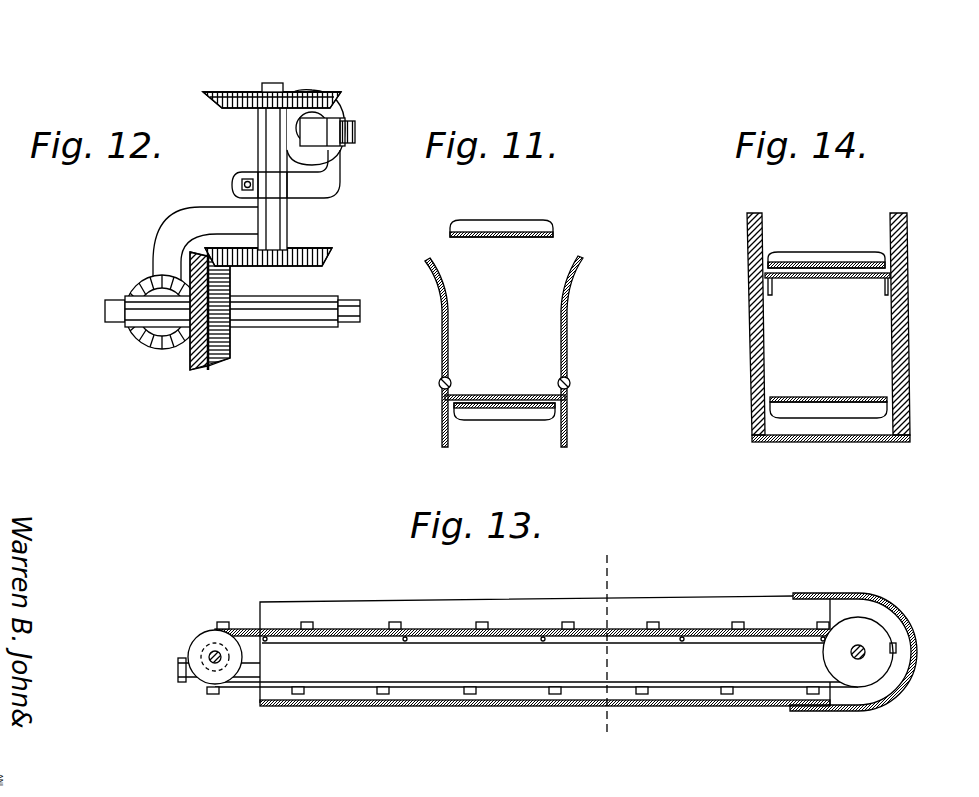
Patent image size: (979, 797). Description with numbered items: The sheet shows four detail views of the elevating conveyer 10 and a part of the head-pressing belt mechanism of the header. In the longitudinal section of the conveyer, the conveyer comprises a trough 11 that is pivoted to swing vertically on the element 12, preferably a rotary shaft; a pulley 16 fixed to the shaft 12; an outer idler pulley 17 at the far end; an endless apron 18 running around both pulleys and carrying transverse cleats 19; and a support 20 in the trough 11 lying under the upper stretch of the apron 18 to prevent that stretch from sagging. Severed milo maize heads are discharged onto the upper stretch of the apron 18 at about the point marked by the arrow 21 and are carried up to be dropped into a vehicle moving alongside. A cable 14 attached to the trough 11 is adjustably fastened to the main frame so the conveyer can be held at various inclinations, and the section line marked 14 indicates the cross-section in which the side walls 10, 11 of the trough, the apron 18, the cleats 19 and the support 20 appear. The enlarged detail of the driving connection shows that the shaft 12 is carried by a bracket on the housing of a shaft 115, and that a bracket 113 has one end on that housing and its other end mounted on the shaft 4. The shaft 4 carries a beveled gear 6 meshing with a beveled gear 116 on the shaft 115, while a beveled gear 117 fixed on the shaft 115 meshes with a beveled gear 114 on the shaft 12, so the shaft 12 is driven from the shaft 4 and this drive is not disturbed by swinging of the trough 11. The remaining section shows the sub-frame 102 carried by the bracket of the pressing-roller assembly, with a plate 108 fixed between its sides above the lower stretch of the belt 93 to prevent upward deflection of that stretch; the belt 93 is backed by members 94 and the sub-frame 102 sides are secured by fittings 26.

In FIG. 12, the shaft 4 is at (112, 330).
In FIG. 12, the beveled gear 6 is at (230, 360).
In FIG. 14, the elevating conveyer 10 is at (740, 368).
In FIG. 13, the elevating conveyer 10 is at (319, 711).
In FIG. 14, the trough 11 is at (915, 368).
In FIG. 13, the trough 11 is at (510, 700).
In FIG. 12, the rotary shaft 12 is at (352, 131).
In FIG. 13, the rotary shaft 12 is at (850, 654).
In FIG. 13, the cable 14 is at (607, 645).
In FIG. 13, the pulley 16 is at (870, 635).
In FIG. 13, the outer idler pulley 17 is at (200, 650).
In FIG. 14, the endless apron 18 is at (797, 262).
In FIG. 13, the endless apron 18 is at (511, 628).
In FIG. 14, the transverse cleats 19 is at (848, 252).
In FIG. 13, the transverse cleats 19 is at (395, 622).
In FIG. 14, the support 20 is at (818, 279).
In FIG. 13, the support 20 is at (435, 643).
In FIG. 13, the arrow 21 is at (710, 527).
In FIG. 11, the retaining ring 26 is at (440, 433).
In FIG. 11, the belt 93 is at (500, 237).
In FIG. 11, the cap block 94 is at (532, 219).
In FIG. 11, the sub-frame 102 is at (440, 320).
In FIG. 11, the cross plate 108 is at (470, 394).
In FIG. 12, the bracket 113 is at (190, 225).
In FIG. 12, the beveled gear 114 is at (312, 106).
In FIG. 12, the shaft 115 is at (283, 84).
In FIG. 12, the beveled gear 116 is at (330, 248).
In FIG. 12, the beveled gear 117 is at (242, 106).